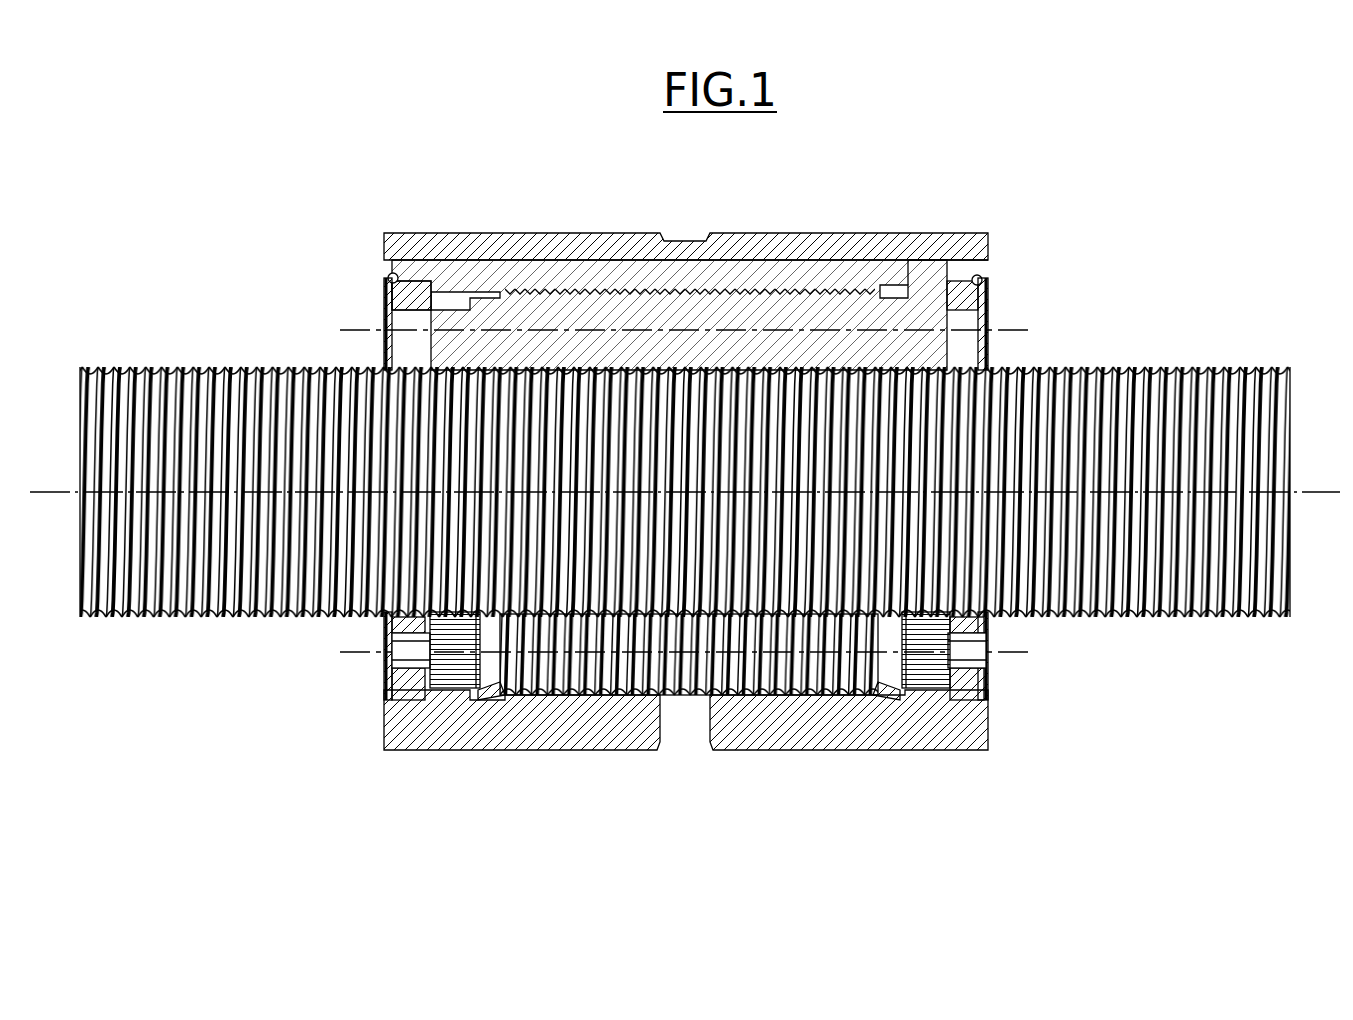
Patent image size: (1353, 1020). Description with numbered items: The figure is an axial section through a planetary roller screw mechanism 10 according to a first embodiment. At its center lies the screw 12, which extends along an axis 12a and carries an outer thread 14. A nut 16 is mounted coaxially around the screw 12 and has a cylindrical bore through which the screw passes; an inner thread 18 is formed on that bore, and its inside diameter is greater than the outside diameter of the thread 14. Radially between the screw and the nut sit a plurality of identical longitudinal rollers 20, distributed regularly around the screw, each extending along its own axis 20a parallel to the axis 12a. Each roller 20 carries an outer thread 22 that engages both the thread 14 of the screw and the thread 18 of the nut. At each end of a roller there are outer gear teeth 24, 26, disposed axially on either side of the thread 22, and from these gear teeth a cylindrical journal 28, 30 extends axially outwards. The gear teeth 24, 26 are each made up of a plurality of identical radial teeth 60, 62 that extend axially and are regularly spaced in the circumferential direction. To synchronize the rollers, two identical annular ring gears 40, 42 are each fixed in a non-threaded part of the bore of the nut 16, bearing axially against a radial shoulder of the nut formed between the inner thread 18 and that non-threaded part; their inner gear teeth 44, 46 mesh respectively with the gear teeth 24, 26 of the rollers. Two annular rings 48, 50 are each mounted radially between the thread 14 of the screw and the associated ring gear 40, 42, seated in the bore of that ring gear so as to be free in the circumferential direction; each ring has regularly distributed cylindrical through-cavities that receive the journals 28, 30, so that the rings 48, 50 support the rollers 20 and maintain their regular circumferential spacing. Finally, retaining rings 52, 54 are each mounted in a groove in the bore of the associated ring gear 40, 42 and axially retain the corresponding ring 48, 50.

The planetary roller screw mechanism 10 is at (990, 170).
The screw 12 is at (1197, 365).
The axis 12a is at (1330, 490).
The outer thread 14 is at (1122, 367).
The nut 16 is at (505, 231).
The inner thread 18 is at (596, 306).
The longitudinal rollers 20 is at (737, 312).
The axis 20a is at (1020, 330).
The outer thread 22 is at (797, 289).
The gear teeth 24 is at (488, 702).
The gear teeth 26 is at (879, 702).
The cylindrical journal 28 is at (400, 672).
The cylindrical journal 30 is at (968, 664).
The annular ring gear 40 is at (417, 718).
The annular ring gear 42 is at (953, 718).
The inner gear teeth 44 is at (434, 632).
The inner gear teeth 46 is at (987, 634).
The annular ring 48 is at (428, 290).
The annular ring 50 is at (961, 292).
The retaining ring 52 is at (389, 279).
The retaining ring 54 is at (985, 281).
The radial teeth 60 is at (444, 676).
The radial teeth 62 is at (922, 672).